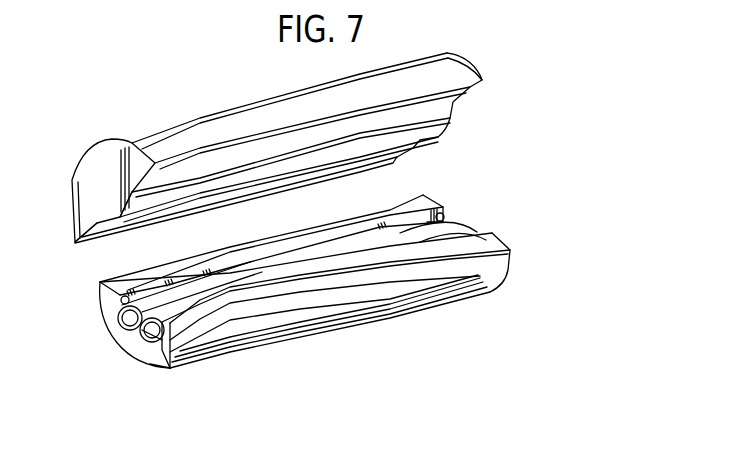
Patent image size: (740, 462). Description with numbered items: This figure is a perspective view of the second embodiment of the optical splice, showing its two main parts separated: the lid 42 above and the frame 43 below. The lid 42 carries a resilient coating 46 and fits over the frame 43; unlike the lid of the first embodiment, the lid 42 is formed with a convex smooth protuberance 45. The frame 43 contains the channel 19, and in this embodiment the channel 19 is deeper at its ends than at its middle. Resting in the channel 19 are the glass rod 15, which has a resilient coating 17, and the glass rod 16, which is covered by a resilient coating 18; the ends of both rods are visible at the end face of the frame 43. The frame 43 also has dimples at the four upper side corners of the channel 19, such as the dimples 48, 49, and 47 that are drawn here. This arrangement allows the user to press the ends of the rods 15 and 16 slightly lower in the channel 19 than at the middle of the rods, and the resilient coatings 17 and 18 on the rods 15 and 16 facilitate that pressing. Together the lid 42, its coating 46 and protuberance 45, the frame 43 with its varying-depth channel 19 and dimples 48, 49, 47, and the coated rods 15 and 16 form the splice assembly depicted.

The glass rod 15 is at (146, 334).
The glass rod 16 is at (125, 323).
The resilient coating 17 is at (150, 340).
The resilient coating 18 is at (121, 317).
The channel 19 is at (413, 222).
The lid 42 is at (110, 203).
The frame 43 is at (157, 367).
The convex smooth protuberance 45 is at (126, 219).
The resilient coating 46 is at (78, 243).
The dimple 47 is at (447, 217).
The dimple 48 is at (120, 301).
The dimple 49 is at (165, 371).